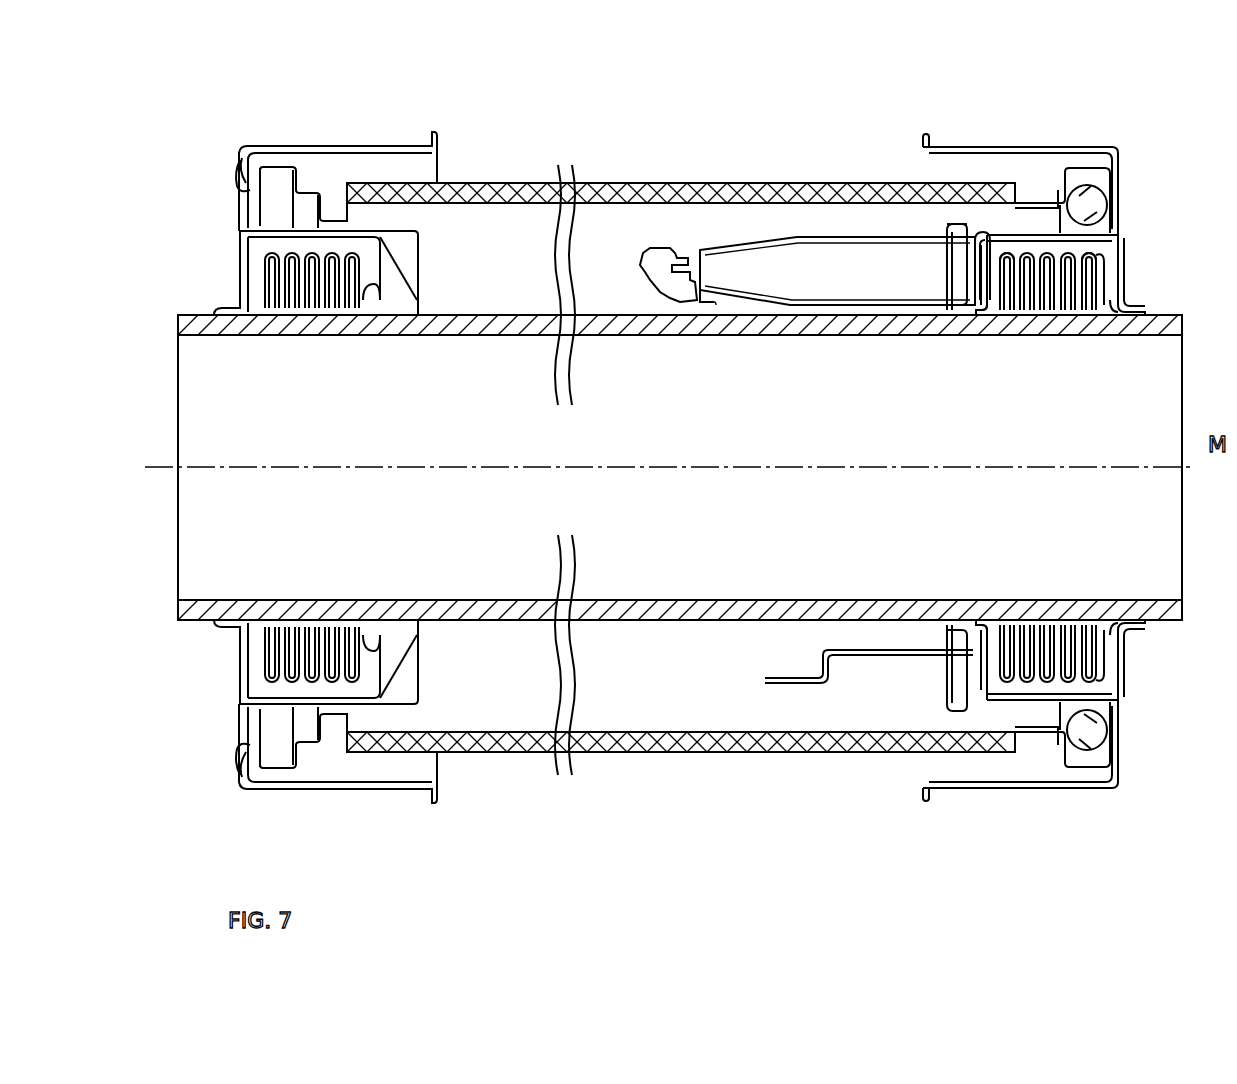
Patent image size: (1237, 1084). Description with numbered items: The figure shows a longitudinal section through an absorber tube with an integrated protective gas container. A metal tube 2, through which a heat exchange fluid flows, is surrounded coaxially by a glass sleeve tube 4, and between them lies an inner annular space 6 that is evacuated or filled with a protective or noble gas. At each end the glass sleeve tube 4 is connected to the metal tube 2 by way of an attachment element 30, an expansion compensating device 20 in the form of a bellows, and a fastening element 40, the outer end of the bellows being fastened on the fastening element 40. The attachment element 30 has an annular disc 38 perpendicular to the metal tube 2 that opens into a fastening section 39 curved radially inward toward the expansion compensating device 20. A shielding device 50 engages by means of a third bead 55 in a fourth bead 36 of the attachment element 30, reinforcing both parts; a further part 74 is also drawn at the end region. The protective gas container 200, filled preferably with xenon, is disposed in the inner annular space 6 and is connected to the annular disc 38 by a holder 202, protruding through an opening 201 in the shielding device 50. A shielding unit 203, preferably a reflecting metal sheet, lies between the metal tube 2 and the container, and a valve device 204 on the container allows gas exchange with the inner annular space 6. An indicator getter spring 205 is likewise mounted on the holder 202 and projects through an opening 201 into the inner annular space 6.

The metal tube 2 is at (1160, 318).
The glass sleeve tube 4 is at (624, 183).
The inner annular space 6 is at (607, 238).
The expansion compensating device 20 is at (1093, 250).
The attachment element 30 is at (955, 237).
The fourth bead 36 is at (1018, 243).
The annular disc 38 is at (967, 233).
The fastening section 39 is at (990, 262).
The fastening element 40 is at (1118, 277).
The shielding device 50 is at (950, 230).
The third bead 55 is at (1012, 237).
The cover flange 74 is at (923, 140).
The protective gas container 200 is at (735, 267).
The opening 201 is at (952, 238).
The holder 202 is at (966, 268).
The shielding unit 203 is at (720, 307).
The valve device 204 is at (658, 277).
The indicator getter spring 205 is at (877, 650).